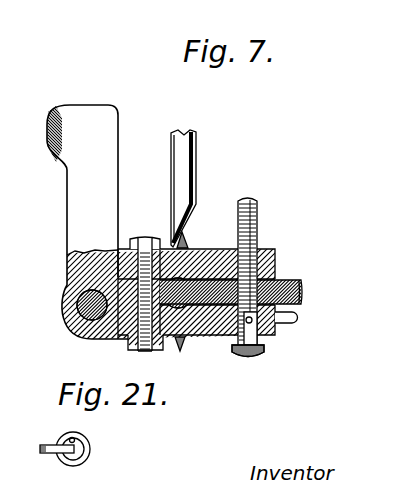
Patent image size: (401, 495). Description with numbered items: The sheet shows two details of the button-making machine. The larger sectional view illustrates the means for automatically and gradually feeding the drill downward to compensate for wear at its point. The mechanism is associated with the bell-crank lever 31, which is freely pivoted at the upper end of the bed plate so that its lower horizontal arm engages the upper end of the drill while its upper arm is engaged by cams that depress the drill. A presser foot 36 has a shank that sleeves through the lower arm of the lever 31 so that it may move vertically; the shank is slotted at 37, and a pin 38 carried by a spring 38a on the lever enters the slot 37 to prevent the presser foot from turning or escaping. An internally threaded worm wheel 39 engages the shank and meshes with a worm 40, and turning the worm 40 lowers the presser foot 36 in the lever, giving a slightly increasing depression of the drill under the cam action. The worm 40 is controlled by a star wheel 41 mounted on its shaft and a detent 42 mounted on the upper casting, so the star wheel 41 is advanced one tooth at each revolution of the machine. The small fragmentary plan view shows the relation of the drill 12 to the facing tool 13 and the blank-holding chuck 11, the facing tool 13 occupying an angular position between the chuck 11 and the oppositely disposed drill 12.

In FIG. 7, the bell-crank lever 31 is at (197, 372).
In FIG. 7, the presser foot 36 is at (260, 353).
In FIG. 7, the slot 37 is at (231, 332).
In FIG. 7, the pin 38 is at (277, 327).
In FIG. 7, the spring 38a is at (237, 359).
In FIG. 7, the internally threaded worm wheel 39 is at (284, 282).
In FIG. 7, the worm 40 is at (206, 250).
In FIG. 7, the star wheel 41 is at (180, 350).
In FIG. 7, the detent 42 is at (171, 184).
In FIG. 21, the chuck 11 is at (91, 448).
In FIG. 21, the drill 12 is at (69, 439).
In FIG. 21, the facing tool 13 is at (55, 453).